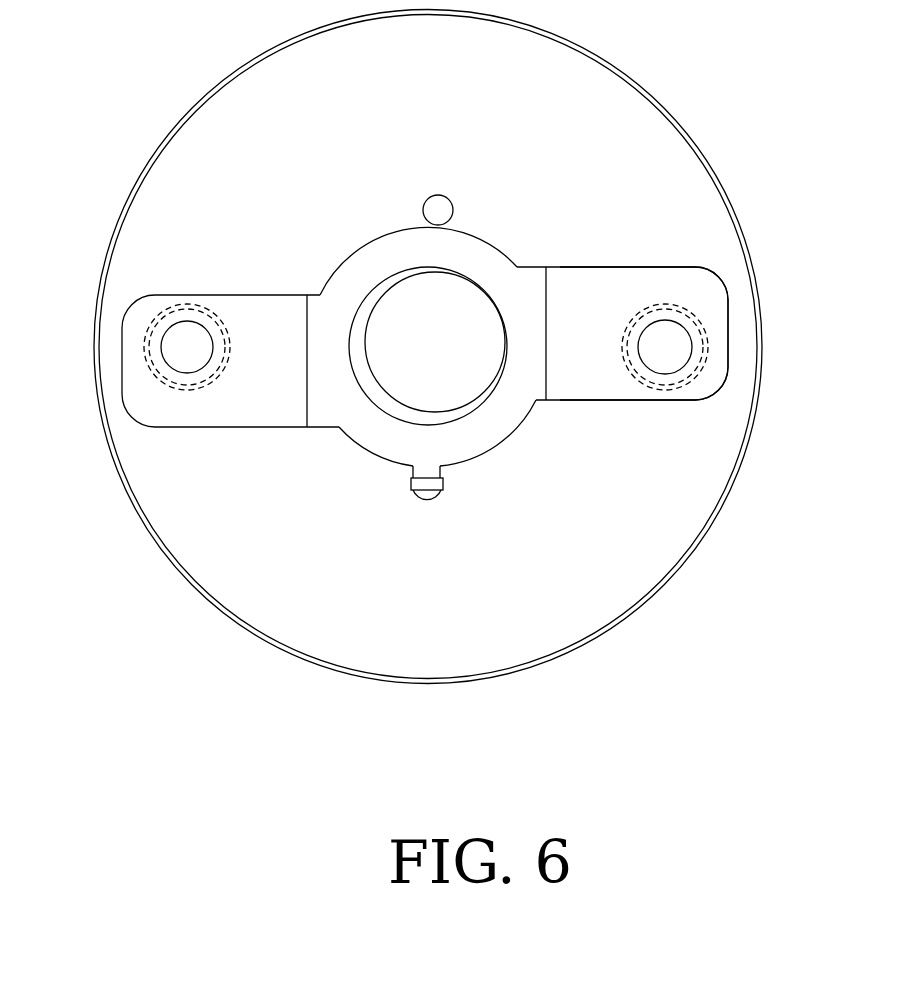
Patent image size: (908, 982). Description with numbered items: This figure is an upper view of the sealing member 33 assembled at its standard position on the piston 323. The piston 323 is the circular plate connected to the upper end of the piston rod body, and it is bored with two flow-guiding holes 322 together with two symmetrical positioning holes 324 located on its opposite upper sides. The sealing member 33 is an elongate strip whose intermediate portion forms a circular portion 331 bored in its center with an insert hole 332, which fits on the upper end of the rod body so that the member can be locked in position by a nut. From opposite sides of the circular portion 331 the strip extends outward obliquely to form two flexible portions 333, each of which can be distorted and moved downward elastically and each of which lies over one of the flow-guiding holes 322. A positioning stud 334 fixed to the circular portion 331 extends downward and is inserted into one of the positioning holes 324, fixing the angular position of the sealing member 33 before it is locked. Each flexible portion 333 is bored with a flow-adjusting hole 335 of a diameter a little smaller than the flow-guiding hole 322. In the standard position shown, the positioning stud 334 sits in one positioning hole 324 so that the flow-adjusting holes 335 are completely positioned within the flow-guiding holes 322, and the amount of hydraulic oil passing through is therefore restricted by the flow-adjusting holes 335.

The sealing member 33 is at (256, 294).
The flow-guiding hole 322 is at (695, 317).
The piston 323 is at (635, 87).
The positioning hole 324 is at (438, 210).
The circular portion 331 is at (493, 247).
The insert hole 332 is at (380, 414).
The flexible portion 333 is at (652, 267).
The positioning stud 334 is at (428, 492).
The flow-adjusting hole 335 is at (690, 347).